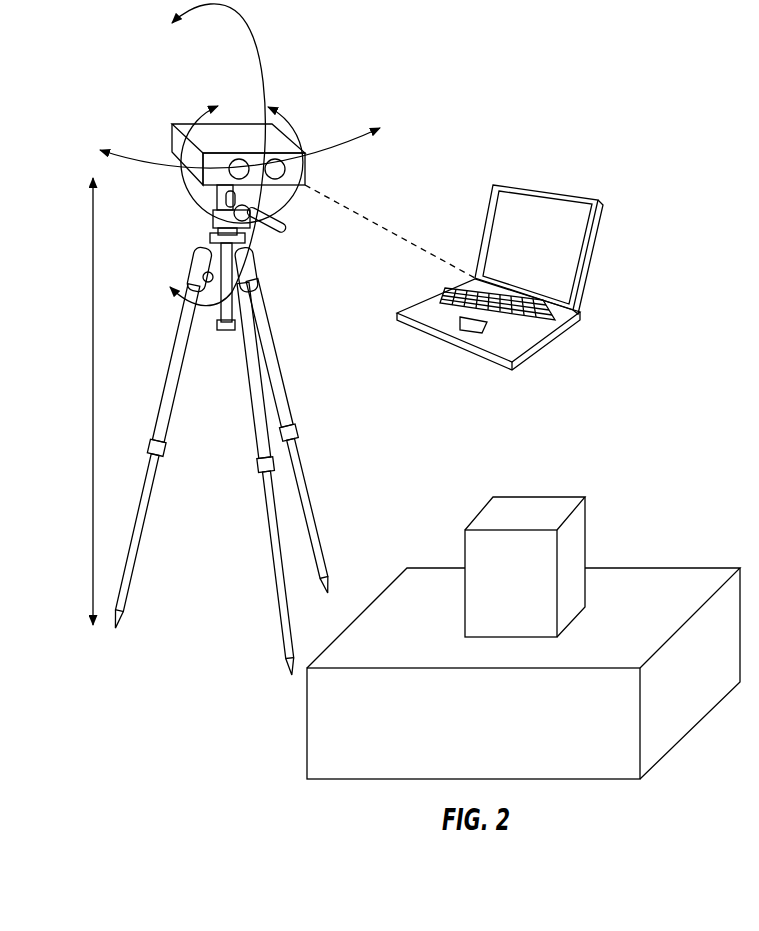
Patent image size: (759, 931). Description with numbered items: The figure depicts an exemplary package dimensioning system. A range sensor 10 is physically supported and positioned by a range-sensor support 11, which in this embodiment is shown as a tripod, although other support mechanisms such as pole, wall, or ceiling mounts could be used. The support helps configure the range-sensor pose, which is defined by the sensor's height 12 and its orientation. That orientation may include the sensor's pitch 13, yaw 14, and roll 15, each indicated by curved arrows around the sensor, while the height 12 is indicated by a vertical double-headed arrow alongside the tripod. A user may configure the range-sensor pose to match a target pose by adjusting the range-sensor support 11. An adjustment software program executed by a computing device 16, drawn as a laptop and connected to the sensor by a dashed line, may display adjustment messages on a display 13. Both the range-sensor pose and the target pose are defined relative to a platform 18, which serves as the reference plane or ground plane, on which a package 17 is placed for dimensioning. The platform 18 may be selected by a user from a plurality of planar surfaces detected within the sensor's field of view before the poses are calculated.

The range sensor 10 is at (157, 132).
The range-sensor support 11 is at (160, 392).
The height 12 is at (91, 582).
The pitch 13 is at (227, 47).
The yaw 14 is at (365, 152).
The roll 15 is at (290, 105).
The computing device 16 is at (506, 338).
The package 17 is at (590, 495).
The platform 18 is at (627, 620).